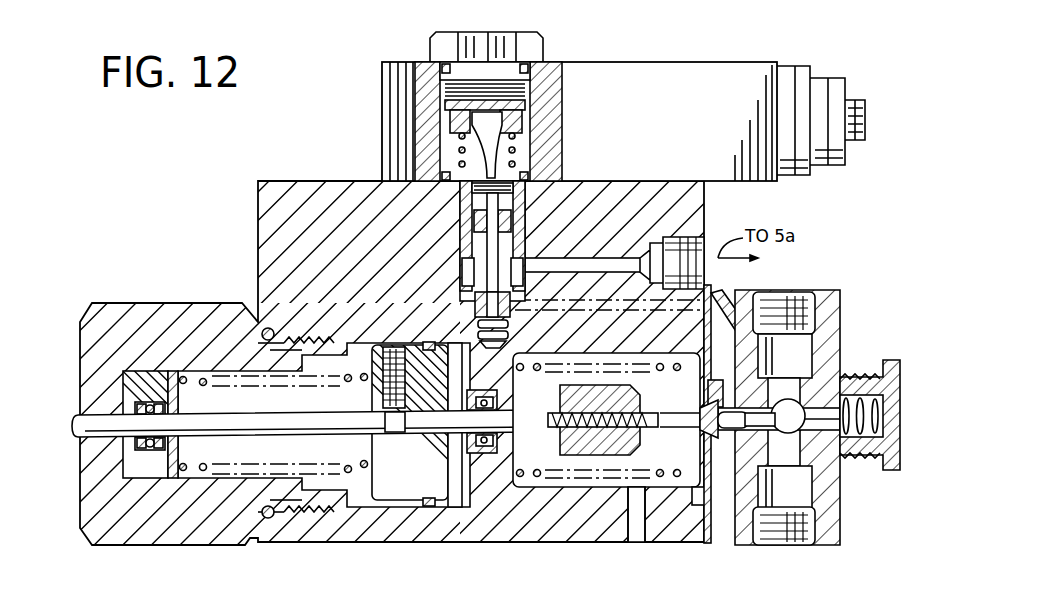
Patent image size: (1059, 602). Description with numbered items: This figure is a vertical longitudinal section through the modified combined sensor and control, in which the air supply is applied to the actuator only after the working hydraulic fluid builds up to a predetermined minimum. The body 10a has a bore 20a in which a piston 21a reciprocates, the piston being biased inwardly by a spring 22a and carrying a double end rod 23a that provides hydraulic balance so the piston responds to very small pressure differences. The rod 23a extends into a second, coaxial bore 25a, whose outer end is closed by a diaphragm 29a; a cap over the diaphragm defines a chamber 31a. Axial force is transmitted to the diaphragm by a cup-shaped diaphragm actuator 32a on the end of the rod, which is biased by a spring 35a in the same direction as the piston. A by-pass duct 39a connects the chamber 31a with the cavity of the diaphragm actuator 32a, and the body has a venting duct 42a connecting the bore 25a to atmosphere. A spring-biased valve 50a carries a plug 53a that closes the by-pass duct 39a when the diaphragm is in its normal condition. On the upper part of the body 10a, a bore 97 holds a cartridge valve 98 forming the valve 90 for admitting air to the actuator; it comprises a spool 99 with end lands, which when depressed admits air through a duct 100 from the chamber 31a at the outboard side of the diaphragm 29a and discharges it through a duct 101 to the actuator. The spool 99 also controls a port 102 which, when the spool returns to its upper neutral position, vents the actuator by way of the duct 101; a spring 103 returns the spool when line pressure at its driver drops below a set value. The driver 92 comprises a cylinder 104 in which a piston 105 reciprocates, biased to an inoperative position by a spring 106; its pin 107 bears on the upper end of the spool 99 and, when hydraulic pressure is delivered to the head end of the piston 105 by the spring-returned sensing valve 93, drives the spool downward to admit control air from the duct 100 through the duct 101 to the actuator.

The body 10a is at (473, 542).
The bore 20a is at (323, 487).
The piston 21a is at (143, 473).
The spring 22a is at (207, 473).
The rod 23a is at (80, 440).
The bore 25a is at (600, 480).
The diaphragm 29a is at (801, 405).
The chamber 31a is at (732, 364).
The diaphragm actuator 32a is at (573, 477).
The spring 35a is at (522, 487).
The by-pass duct 39a is at (706, 410).
The venting duct 42a is at (637, 523).
The valve 50a is at (833, 420).
The plug 53a is at (728, 483).
The valve 90 is at (465, 275).
The driver 92 is at (478, 121).
The sensing valve 93 is at (598, 62).
The bore 97 is at (472, 228).
The cartridge valve 98 is at (502, 196).
The spool 99 is at (480, 250).
The duct 100 is at (620, 311).
The duct 101 is at (622, 250).
The port 102 is at (465, 200).
The spring 103 is at (478, 325).
The cylinder 104 is at (528, 136).
The piston 105 is at (525, 105).
The spring 106 is at (514, 158).
The pin 107 is at (485, 172).